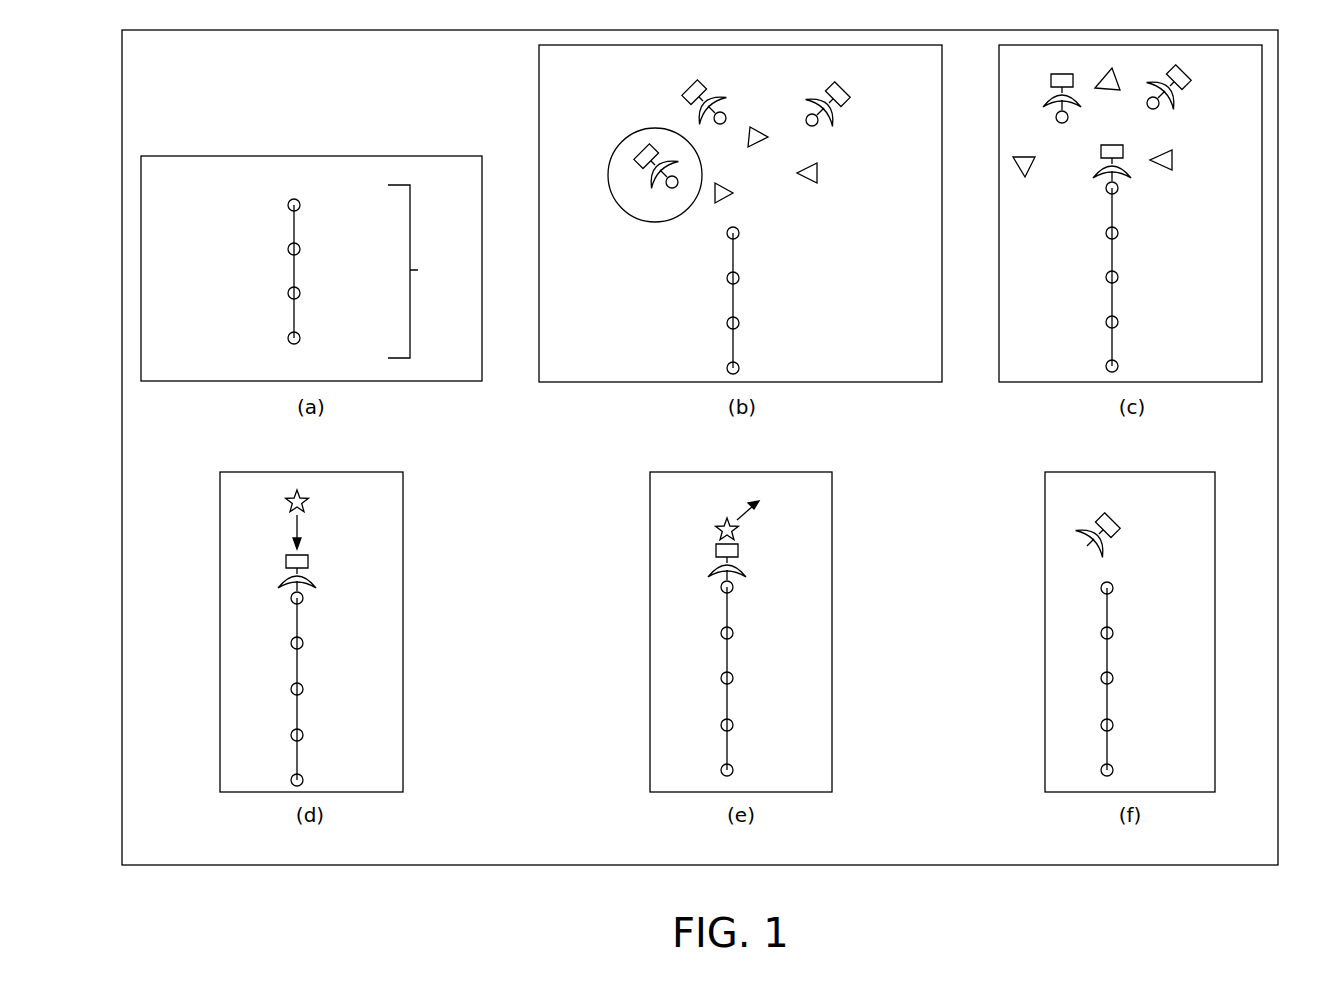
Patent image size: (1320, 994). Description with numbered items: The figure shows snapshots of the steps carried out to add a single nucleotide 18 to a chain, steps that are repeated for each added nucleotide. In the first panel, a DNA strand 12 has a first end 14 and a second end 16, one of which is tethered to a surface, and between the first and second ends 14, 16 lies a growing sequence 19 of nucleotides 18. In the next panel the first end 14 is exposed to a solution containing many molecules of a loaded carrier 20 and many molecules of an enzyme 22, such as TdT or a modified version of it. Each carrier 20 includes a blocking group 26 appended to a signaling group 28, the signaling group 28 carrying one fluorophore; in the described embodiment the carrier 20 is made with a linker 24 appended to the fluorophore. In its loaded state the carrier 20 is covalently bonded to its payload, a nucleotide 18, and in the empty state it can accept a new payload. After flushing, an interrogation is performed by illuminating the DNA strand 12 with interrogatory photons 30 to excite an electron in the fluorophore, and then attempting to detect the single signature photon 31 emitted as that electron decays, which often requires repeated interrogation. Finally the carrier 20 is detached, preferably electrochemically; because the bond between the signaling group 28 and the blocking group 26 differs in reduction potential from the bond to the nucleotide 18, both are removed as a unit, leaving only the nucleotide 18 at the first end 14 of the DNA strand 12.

The DNA strand 12 is at (226, 253).
The first end 14 is at (282, 201).
The second end 16 is at (277, 338).
The nucleotide 18 is at (304, 781).
The growing sequence 19 is at (418, 270).
The carrier 20 is at (608, 163).
The enzyme 22 is at (851, 176).
The linker 24 is at (725, 112).
The blocking group 26 is at (250, 585).
The signaling group 28 is at (309, 560).
The interrogatory photon 30 is at (310, 500).
The signature photon 31 is at (715, 535).